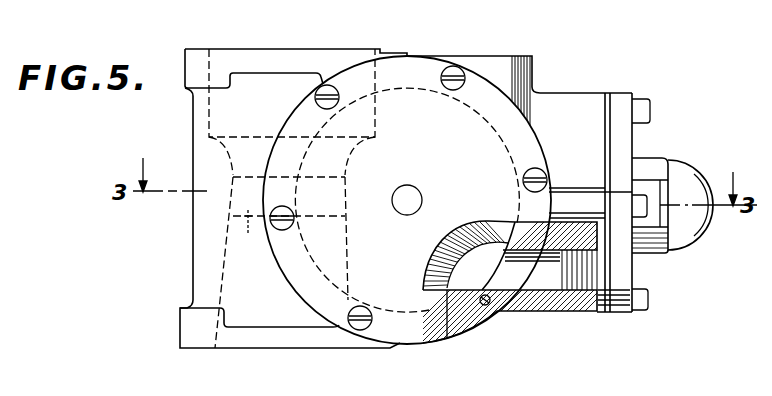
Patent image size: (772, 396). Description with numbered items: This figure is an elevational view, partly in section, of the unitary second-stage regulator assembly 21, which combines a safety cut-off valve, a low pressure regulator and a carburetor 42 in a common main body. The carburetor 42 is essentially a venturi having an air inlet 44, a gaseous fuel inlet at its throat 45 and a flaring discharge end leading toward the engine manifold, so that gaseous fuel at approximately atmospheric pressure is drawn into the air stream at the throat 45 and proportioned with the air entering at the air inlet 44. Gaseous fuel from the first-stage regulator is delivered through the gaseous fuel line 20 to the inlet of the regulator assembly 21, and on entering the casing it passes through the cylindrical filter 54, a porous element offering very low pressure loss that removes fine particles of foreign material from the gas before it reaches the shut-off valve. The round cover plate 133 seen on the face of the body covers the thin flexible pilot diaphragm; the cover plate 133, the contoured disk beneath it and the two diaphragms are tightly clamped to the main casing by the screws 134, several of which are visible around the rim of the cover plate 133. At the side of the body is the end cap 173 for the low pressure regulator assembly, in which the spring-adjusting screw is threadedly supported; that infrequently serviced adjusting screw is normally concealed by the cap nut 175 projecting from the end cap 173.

The second-stage regulator assembly 21 is at (553, 65).
The air inlet 44 is at (223, 109).
The carburetor 42 is at (192, 243).
The throat 45 is at (250, 236).
The cover plate 133 is at (421, 70).
The screws 134 is at (328, 85).
The end cap 173 is at (623, 272).
The cap nut 175 is at (678, 180).
The gaseous fuel line 20 is at (531, 283).
The cylindrical filter 54 is at (447, 338).